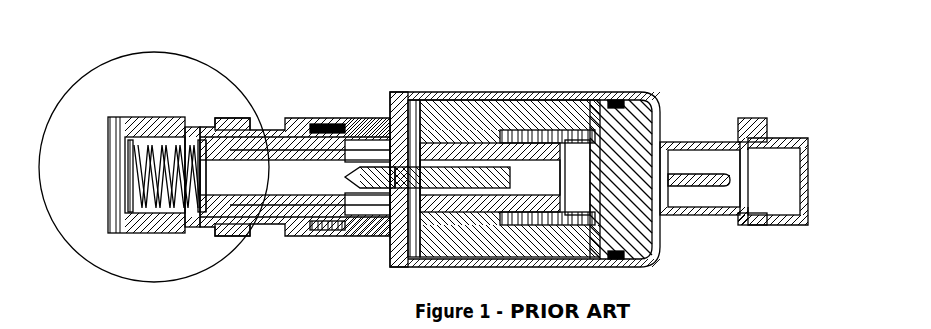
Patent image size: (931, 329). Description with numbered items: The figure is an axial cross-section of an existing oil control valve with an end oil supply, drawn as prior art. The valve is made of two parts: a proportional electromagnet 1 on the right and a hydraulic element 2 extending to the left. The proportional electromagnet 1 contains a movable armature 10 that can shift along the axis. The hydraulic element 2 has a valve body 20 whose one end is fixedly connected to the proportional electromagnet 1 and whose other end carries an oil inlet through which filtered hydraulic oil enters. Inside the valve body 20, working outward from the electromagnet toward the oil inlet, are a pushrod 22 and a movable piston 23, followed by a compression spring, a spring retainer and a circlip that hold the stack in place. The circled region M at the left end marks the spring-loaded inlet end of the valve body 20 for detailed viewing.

The proportional electromagnet 1 is at (423, 149).
The hydraulic element 2 is at (360, 73).
The movable armature 10 is at (525, 158).
The valve body 20 is at (296, 118).
The pushrod 22 is at (413, 130).
The movable piston 23 is at (326, 124).
The detail region M is at (176, 56).